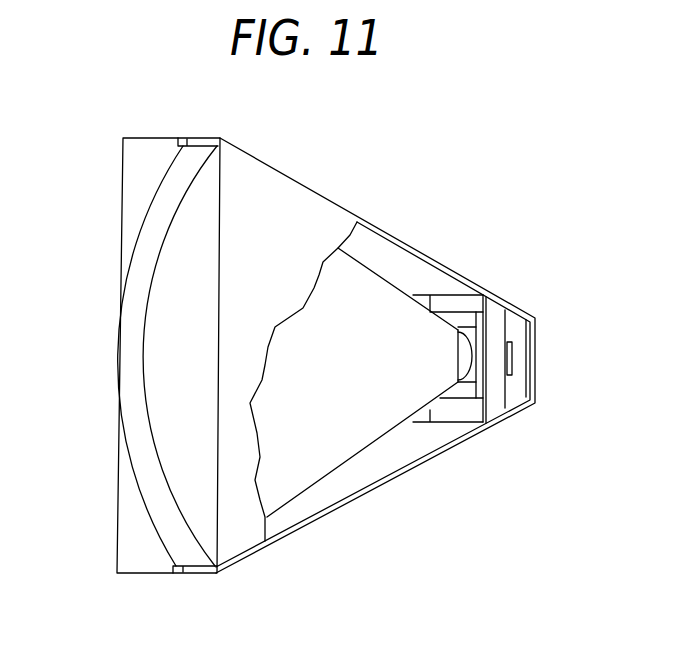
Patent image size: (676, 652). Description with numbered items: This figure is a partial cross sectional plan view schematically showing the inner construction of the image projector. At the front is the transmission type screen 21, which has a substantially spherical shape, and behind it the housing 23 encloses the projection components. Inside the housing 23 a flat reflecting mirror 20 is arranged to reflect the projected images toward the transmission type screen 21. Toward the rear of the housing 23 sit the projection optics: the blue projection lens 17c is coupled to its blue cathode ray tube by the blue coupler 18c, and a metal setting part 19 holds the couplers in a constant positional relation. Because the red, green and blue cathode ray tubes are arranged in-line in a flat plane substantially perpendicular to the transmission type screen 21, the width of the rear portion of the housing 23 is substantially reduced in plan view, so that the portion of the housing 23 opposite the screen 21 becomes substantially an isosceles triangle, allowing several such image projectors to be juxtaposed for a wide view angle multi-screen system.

The transmission type screen 21 is at (133, 450).
The housing 23 is at (316, 192).
The flat reflecting mirror 20 is at (390, 296).
The blue coupler 18c is at (447, 294).
The blue projection lens 17c is at (467, 345).
The metal setting part 19 is at (507, 390).